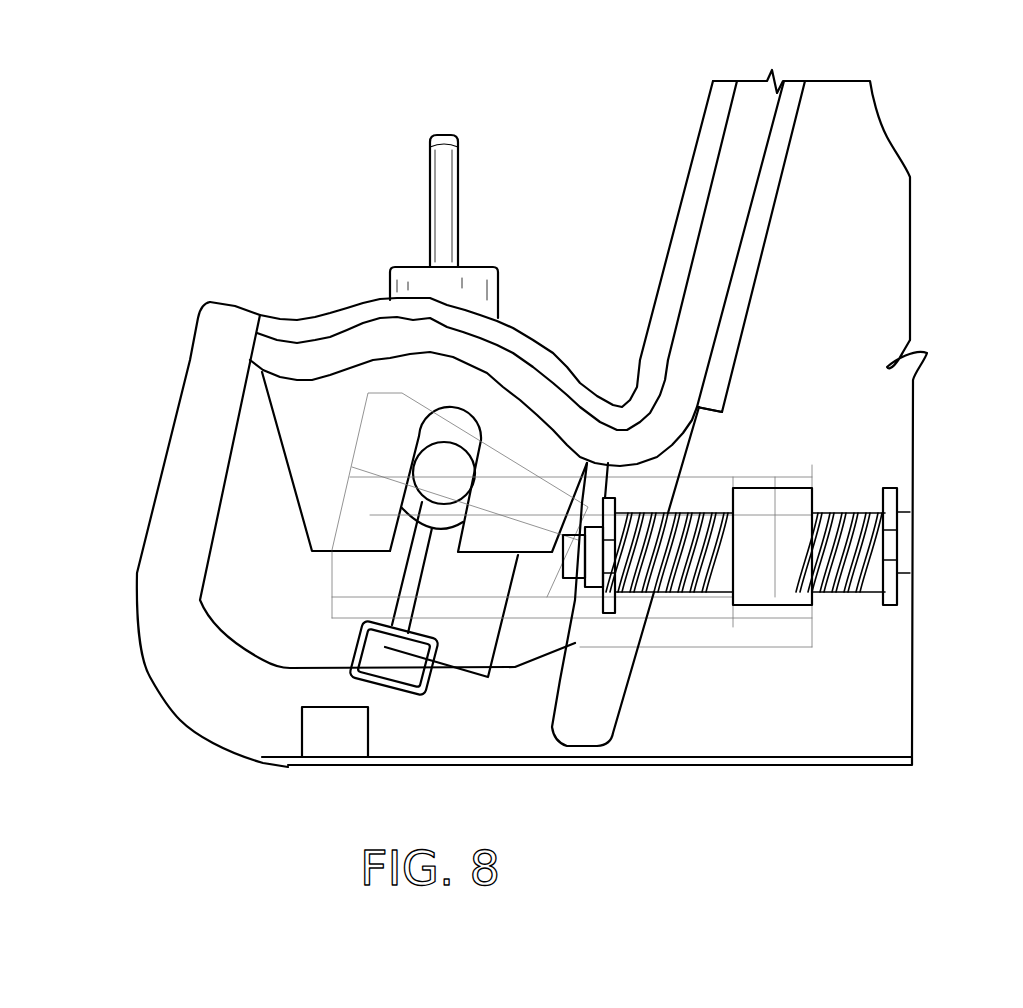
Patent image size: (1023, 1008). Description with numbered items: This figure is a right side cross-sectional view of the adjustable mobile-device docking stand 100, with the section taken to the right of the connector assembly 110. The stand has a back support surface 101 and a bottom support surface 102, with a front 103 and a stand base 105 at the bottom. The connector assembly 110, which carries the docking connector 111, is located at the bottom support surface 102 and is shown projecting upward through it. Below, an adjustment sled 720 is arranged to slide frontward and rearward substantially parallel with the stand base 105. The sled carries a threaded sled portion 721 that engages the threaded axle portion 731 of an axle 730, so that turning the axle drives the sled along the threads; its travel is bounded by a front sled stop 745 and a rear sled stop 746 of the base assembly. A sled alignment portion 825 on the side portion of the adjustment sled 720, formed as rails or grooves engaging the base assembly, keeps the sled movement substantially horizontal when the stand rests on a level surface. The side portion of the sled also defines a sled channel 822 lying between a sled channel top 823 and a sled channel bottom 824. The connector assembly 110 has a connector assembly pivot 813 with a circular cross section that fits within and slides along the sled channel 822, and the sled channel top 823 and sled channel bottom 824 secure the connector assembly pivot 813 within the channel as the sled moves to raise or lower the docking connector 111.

The adjustable mobile-device docking stand 100 is at (522, 456).
The back support surface 101 is at (690, 163).
The bottom support surface 102 is at (523, 328).
The front 103 is at (165, 478).
The stand base 105 is at (800, 766).
The connector assembly 110 is at (472, 283).
The docking connector 111 is at (443, 140).
The adjustment sled 720 is at (697, 632).
The threaded sled portion 721 is at (795, 505).
The axle 730 is at (804, 511).
The threaded axle portion 731 is at (838, 503).
The front sled stop 745 is at (612, 615).
The rear sled stop 746 is at (905, 590).
The connector assembly pivot 813 is at (443, 463).
The sled channel 822 is at (383, 442).
The sled channel top 823 is at (390, 403).
The sled channel bottom 824 is at (368, 497).
The sled alignment portion 825 is at (338, 610).